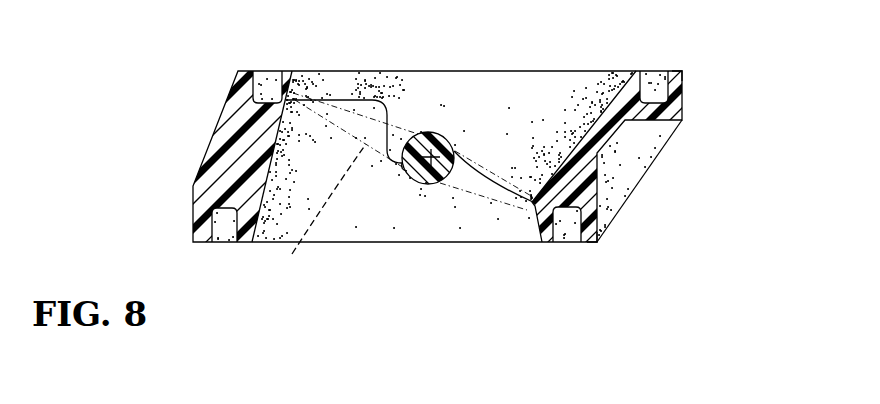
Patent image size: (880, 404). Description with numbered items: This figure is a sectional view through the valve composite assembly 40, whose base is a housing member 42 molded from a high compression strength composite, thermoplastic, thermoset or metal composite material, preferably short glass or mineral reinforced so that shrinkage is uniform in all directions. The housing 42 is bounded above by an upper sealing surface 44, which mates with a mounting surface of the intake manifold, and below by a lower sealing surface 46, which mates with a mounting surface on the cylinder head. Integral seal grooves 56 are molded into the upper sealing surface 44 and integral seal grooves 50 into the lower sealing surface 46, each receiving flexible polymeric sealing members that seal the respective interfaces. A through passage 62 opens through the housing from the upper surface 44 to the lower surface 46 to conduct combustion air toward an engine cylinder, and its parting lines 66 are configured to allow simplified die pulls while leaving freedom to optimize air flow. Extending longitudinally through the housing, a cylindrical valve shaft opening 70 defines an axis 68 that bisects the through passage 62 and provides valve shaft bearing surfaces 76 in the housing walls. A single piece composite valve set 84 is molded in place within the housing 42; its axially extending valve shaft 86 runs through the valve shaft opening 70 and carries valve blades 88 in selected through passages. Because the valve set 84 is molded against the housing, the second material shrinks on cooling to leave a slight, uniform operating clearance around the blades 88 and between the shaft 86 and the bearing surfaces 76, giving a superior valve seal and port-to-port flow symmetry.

The valve composite assembly 40 is at (205, 115).
The housing member 42 is at (655, 175).
The upper sealing surface 44 is at (681, 70).
The lower sealing surface 46 is at (595, 244).
The seal grooves 50 is at (563, 210).
The seal grooves 56 is at (656, 95).
The through passage 62 is at (608, 105).
The parting lines 66 is at (350, 101).
The axis 68 is at (450, 130).
The valve shaft opening 70 is at (428, 185).
The valve shaft bearing surfaces 76 is at (449, 185).
The valve set 84 is at (412, 125).
The valve shaft 86 is at (400, 174).
The valve blades 88 is at (324, 211).